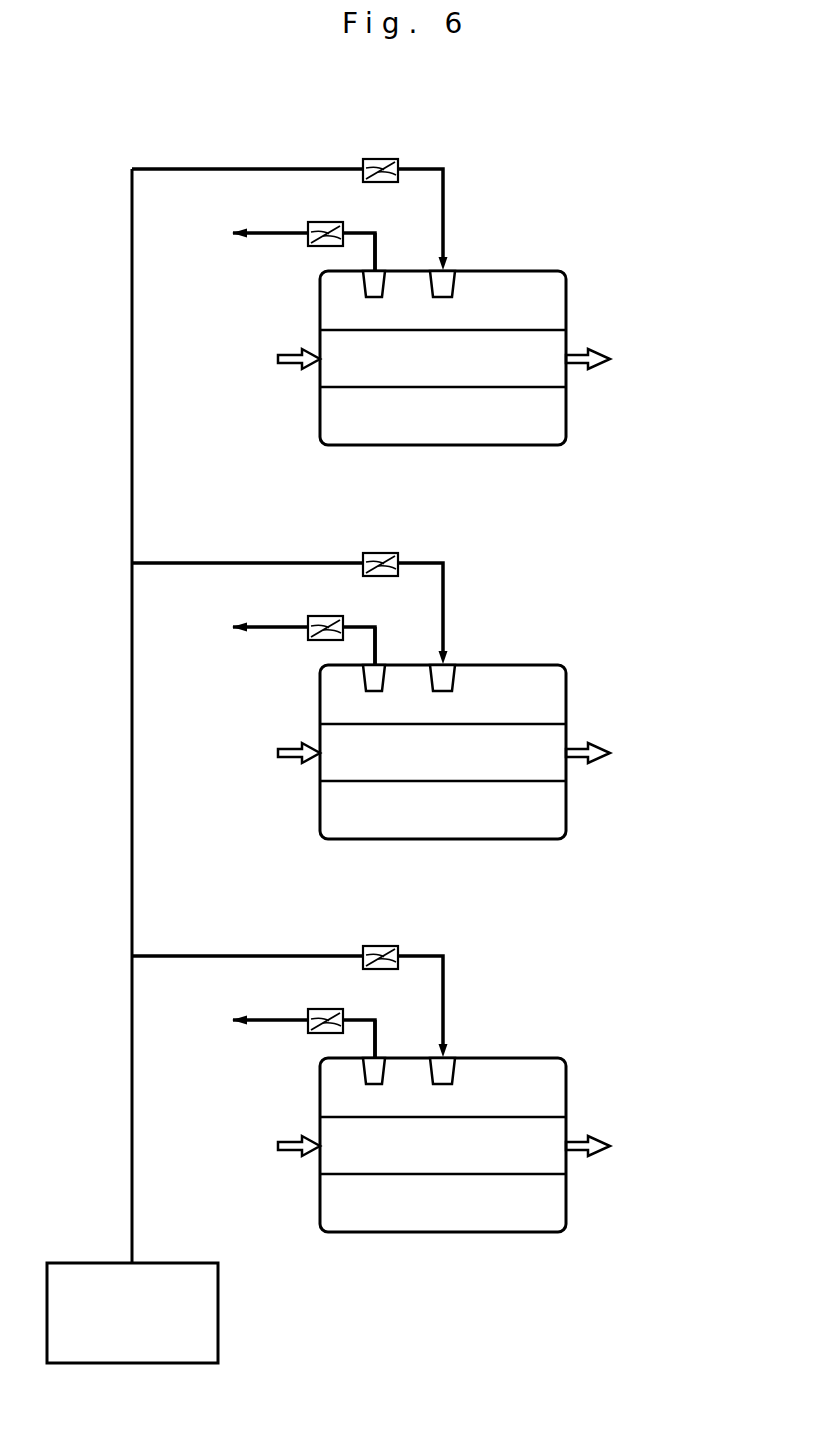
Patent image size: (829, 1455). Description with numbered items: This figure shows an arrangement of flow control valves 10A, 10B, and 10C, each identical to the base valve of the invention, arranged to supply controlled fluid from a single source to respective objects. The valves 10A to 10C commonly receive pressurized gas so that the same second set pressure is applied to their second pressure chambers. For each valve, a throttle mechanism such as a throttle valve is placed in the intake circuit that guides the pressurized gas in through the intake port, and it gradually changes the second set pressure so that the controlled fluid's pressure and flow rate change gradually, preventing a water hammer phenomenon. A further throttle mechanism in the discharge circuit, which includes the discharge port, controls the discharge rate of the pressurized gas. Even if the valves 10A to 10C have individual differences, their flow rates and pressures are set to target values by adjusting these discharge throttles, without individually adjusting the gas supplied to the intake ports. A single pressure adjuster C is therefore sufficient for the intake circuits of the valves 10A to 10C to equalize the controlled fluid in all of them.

The flow control valve 10A is at (567, 277).
The flow control valve 10B is at (488, 711).
The flow control valve 10C is at (488, 1104).
The pressure adjuster C is at (143, 1335).